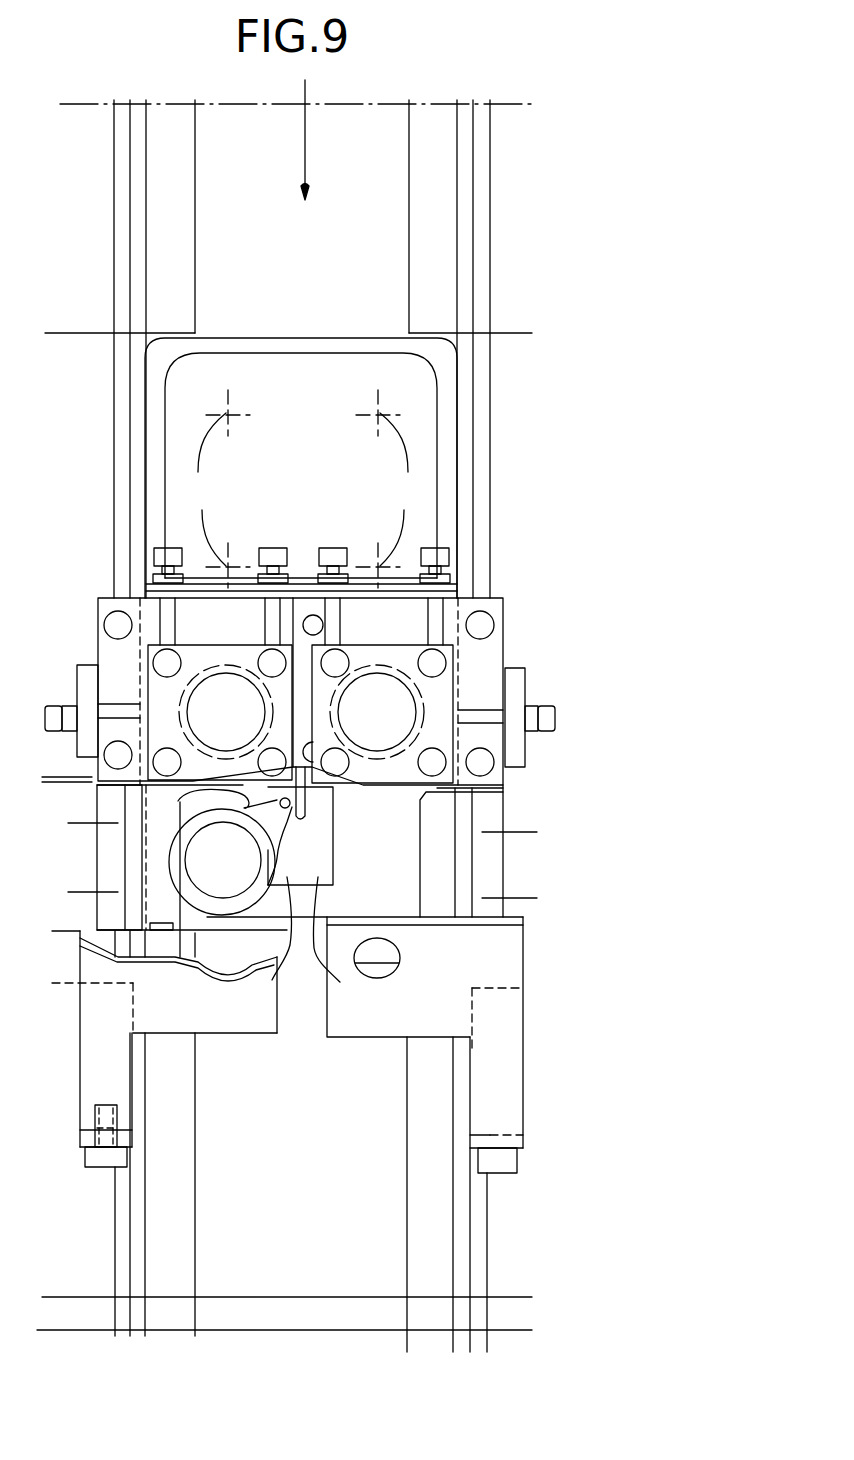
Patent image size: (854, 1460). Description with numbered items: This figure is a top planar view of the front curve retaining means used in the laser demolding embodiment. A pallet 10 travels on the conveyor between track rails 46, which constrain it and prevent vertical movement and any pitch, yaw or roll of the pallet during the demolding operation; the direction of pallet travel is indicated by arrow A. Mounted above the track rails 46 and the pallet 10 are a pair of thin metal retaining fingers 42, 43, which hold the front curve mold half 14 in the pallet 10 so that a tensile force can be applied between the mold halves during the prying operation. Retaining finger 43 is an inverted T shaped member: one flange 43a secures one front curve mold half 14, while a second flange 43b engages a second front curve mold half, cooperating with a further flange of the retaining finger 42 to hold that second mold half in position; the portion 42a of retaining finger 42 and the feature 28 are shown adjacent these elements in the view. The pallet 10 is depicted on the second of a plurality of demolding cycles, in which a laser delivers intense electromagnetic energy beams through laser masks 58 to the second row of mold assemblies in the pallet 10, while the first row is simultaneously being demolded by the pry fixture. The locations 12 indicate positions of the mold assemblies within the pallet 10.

The direction of movement A is at (305, 158).
The pallet 10 is at (284, 472).
The mounting positions 12 is at (297, 489).
The front curve mold half 14 is at (238, 877).
The cam lobe 28 is at (178, 801).
The retaining finger 42 is at (157, 850).
The guide block 42a is at (440, 845).
The retaining finger 43 is at (313, 800).
The flange 43a is at (272, 980).
The second flange 43b is at (340, 982).
The track rails 46 is at (409, 258).
The laser masks 58 is at (157, 695).